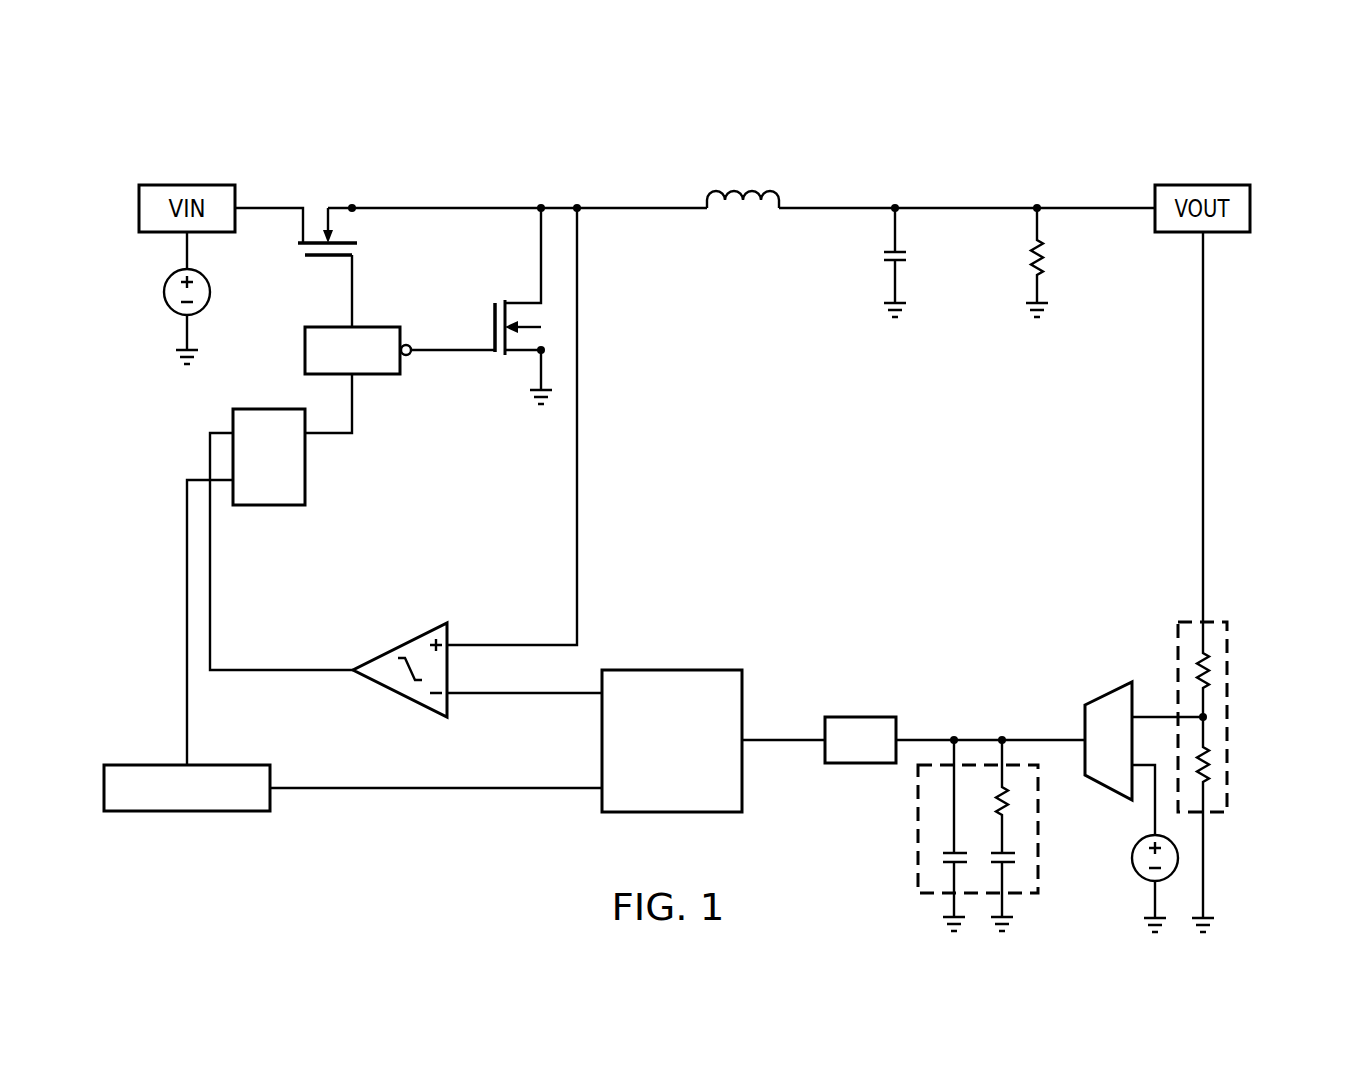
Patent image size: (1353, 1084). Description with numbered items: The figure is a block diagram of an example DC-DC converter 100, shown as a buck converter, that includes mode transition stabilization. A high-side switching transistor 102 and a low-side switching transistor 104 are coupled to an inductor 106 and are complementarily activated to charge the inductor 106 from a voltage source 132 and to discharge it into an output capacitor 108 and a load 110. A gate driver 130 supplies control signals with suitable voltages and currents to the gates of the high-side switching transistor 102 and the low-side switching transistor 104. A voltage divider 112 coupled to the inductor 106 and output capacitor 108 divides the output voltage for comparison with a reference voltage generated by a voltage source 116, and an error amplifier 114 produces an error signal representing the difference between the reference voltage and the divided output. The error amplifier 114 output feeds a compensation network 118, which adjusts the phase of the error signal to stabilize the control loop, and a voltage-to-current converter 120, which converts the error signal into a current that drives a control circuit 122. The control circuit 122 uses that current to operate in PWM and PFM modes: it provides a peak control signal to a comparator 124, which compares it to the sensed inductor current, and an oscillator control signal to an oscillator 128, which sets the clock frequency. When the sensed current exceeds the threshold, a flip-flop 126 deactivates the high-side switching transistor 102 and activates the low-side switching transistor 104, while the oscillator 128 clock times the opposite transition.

The DC-DC converter 100 is at (421, 118).
The high-side switching transistor 102 is at (318, 262).
The low-side switching transistor 104 is at (490, 310).
The inductor 106 is at (752, 190).
The output capacitor 108 is at (908, 257).
The load 110 is at (1046, 257).
The voltage divider 112 is at (1240, 750).
The error amplifier 114 is at (1110, 690).
The voltage source 116 is at (1133, 858).
The compensation network 118 is at (908, 832).
The voltage-to-current converter 120 is at (858, 715).
The control circuit 122 is at (650, 773).
The comparator 124 is at (400, 640).
The flip-flop 126 is at (266, 407).
The oscillator 128 is at (175, 814).
The gate driver 130 is at (375, 325).
The voltage source 132 is at (163, 292).